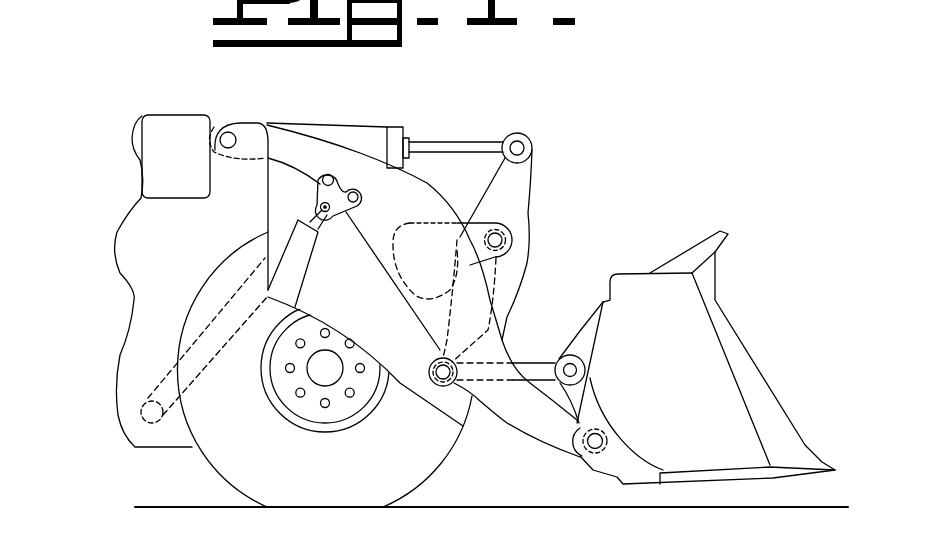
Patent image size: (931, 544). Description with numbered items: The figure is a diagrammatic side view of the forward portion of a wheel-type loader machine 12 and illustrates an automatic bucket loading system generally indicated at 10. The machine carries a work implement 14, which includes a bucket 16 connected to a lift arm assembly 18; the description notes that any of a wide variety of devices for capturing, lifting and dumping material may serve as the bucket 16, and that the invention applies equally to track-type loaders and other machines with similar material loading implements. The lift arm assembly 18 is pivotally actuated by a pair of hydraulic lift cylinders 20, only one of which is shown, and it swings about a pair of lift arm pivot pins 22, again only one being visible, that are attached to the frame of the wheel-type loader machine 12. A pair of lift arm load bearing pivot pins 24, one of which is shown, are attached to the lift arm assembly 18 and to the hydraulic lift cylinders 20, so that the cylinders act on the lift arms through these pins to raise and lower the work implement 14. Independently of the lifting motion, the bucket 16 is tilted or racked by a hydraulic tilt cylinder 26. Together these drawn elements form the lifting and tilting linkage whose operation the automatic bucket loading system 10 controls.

The automatic bucket loading system 10 is at (455, 294).
The wheel-type loader machine 12 is at (113, 130).
The work implement 14 is at (716, 157).
The bucket 16 is at (627, 280).
The lift arm assembly 18 is at (290, 152).
The hydraulic lift cylinders 20 is at (294, 266).
The lift arm pivot pins 22 is at (232, 139).
The lift arm load bearing pivot pins 24 is at (320, 206).
The hydraulic tilt cylinder 26 is at (372, 145).